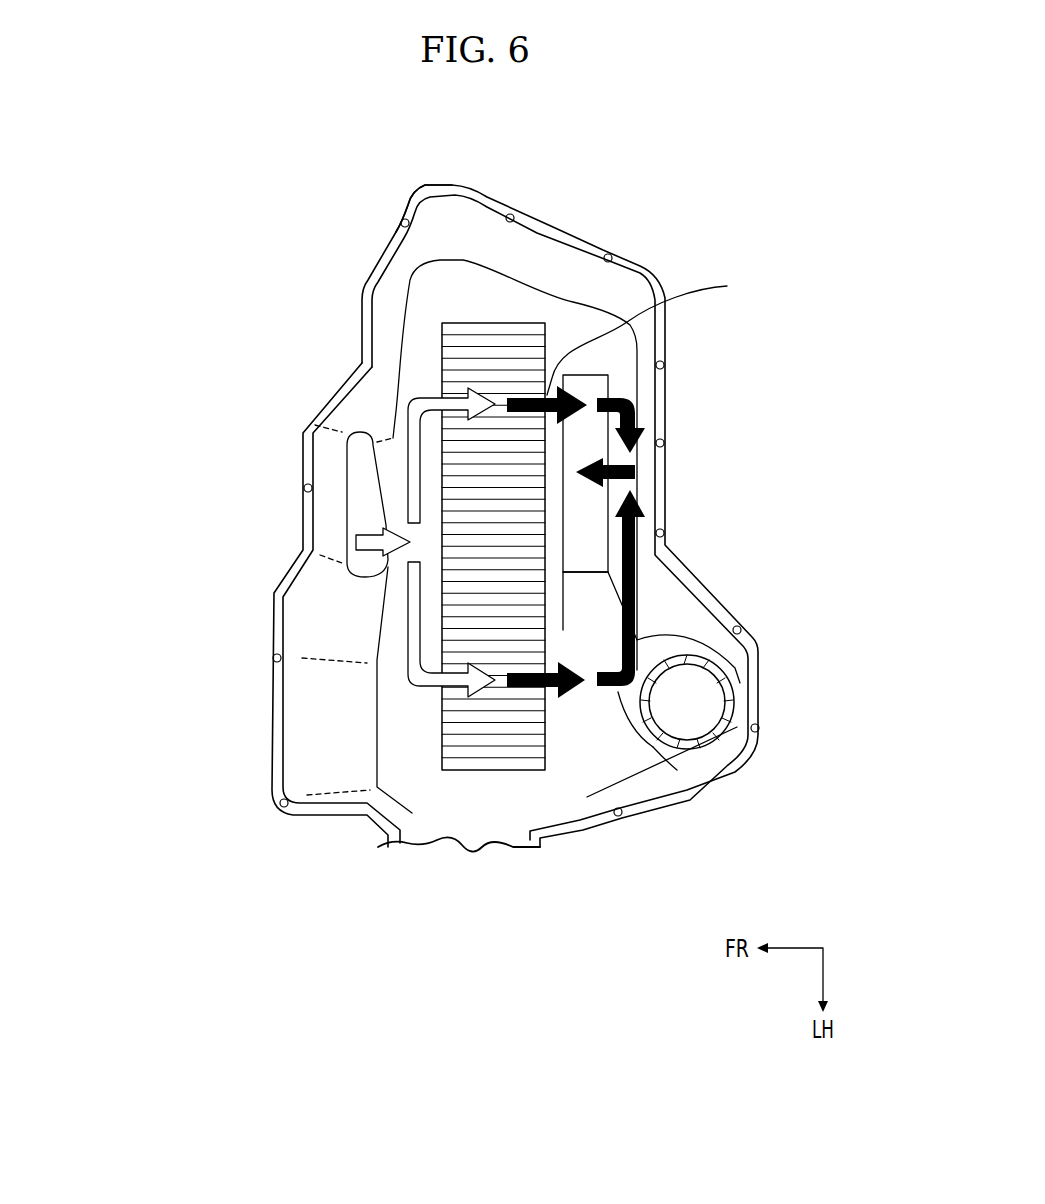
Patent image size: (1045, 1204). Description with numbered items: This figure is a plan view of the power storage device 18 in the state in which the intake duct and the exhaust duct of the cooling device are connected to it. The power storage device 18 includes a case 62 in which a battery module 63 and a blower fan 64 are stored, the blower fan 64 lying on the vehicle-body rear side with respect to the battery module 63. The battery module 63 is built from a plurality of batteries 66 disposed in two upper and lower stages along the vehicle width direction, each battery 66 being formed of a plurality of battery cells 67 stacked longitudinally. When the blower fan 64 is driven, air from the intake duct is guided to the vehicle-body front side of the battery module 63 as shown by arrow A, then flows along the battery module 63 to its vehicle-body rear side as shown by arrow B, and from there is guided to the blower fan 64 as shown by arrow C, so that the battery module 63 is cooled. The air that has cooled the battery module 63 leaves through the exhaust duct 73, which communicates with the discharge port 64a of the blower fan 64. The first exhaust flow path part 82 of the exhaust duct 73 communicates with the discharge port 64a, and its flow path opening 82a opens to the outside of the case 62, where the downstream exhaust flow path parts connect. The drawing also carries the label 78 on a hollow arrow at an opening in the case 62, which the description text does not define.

The power storage device 18 is at (390, 204).
The case 62 is at (275, 737).
The battery module 63 is at (430, 354).
The blower fan 64 is at (598, 447).
The discharge port 64a is at (590, 563).
The battery 66 is at (547, 630).
The battery cell 67 is at (530, 353).
The exhaust duct 73 is at (714, 752).
The vent opening (intake 71) 78 is at (357, 506).
The first exhaust flow path part 82 is at (603, 640).
The flow path opening 82a is at (652, 735).
The arrow A is at (407, 490).
The arrow B is at (545, 353).
The arrow C is at (630, 406).